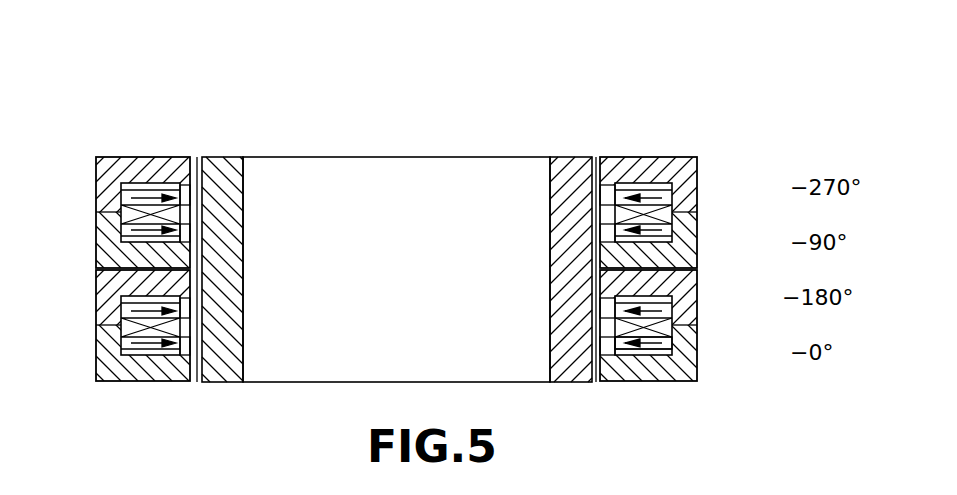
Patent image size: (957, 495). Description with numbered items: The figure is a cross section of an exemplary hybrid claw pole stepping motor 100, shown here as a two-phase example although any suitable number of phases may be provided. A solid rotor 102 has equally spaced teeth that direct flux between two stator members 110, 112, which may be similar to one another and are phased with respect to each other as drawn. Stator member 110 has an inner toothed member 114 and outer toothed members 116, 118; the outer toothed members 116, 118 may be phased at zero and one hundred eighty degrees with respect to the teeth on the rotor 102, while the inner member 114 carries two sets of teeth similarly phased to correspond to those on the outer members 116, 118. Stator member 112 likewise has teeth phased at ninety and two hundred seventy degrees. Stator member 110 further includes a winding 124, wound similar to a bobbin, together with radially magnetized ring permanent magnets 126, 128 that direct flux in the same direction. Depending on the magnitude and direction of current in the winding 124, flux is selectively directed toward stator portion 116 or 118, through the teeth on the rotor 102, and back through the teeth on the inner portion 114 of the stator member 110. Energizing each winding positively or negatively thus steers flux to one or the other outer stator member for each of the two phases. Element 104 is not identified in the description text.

The hybrid claw pole stepping motor 100 is at (610, 58).
The solid rotor 102 is at (407, 128).
The bearing 104 is at (199, 157).
The stator member 110 is at (677, 400).
The stator member 112 is at (676, 127).
The inner toothed member 114 is at (605, 338).
The outer toothed member 116 is at (697, 367).
The outer toothed member 118 is at (697, 293).
The winding 124 is at (662, 322).
The radially magnetized ring permanent magnet 126 is at (652, 346).
The radially magnetized ring permanent magnet 128 is at (607, 313).